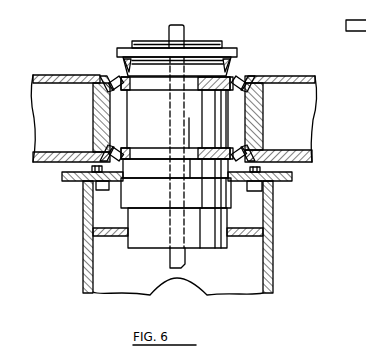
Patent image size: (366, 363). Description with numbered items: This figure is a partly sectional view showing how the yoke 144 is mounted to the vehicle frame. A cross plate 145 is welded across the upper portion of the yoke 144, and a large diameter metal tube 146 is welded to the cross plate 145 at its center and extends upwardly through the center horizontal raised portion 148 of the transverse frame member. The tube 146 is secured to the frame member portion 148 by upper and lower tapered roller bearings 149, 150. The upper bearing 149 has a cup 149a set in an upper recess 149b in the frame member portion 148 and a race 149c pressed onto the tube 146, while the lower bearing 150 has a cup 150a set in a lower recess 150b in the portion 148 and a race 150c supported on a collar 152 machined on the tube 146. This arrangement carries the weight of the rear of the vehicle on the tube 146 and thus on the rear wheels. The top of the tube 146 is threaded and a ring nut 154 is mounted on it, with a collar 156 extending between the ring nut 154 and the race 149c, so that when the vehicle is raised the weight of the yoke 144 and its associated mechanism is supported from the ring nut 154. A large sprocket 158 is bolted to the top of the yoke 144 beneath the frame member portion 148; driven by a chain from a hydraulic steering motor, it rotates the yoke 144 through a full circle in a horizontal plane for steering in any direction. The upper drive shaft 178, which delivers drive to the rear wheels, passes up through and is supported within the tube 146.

The upper drive shaft 178 is at (185, 36).
The ring nut 154 is at (229, 48).
The collar 156 is at (233, 67).
The upper tapered roller bearing 149 is at (151, 78).
The cup 149a is at (108, 78).
The upper recess 149b is at (100, 88).
The race 149c is at (236, 80).
The center horizontal raised portion 148 is at (301, 77).
The lower tapered roller bearing 150 is at (154, 135).
The cup 150a is at (105, 156).
The lower recess 150b is at (110, 150).
The race 150c is at (140, 153).
The collar 152 is at (162, 172).
The large sprocket 158 is at (293, 177).
The large diameter metal tube 146 is at (205, 250).
The cross plate 145 is at (243, 236).
The yoke 144 is at (273, 260).